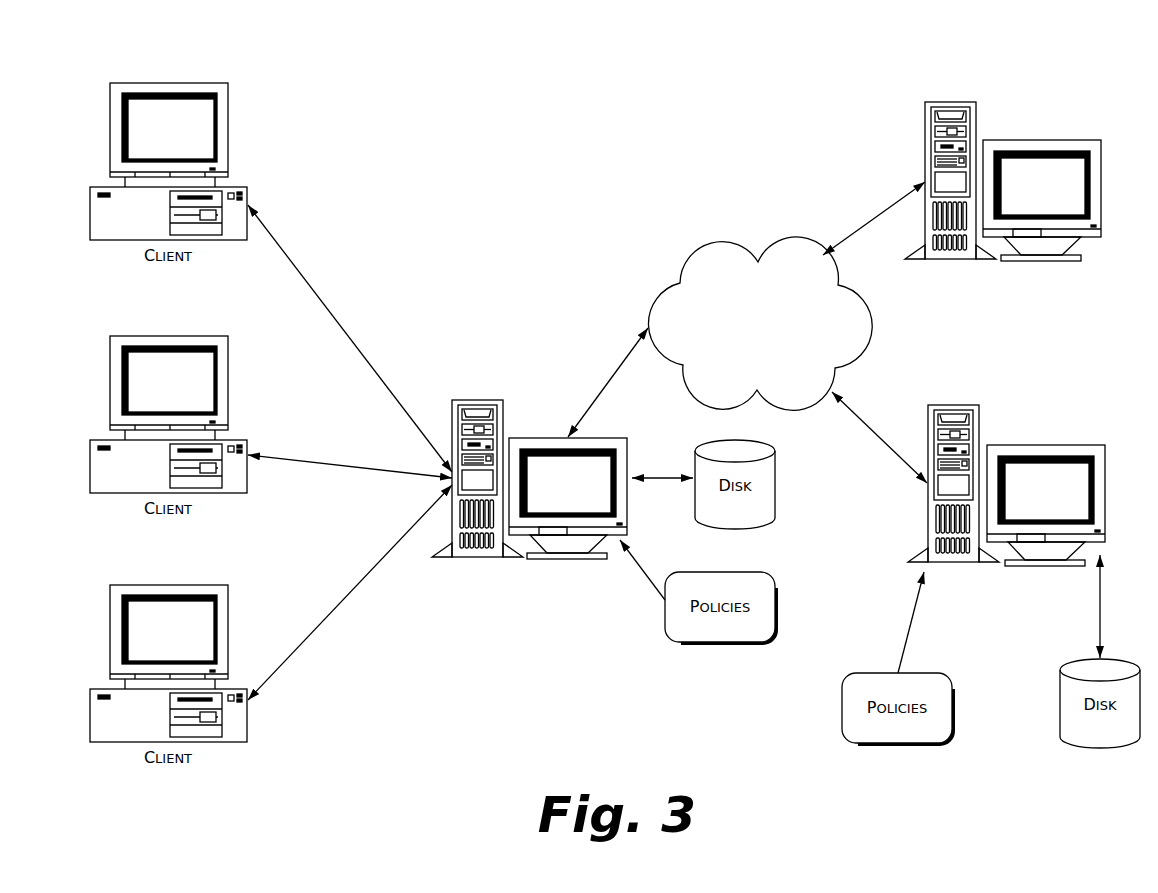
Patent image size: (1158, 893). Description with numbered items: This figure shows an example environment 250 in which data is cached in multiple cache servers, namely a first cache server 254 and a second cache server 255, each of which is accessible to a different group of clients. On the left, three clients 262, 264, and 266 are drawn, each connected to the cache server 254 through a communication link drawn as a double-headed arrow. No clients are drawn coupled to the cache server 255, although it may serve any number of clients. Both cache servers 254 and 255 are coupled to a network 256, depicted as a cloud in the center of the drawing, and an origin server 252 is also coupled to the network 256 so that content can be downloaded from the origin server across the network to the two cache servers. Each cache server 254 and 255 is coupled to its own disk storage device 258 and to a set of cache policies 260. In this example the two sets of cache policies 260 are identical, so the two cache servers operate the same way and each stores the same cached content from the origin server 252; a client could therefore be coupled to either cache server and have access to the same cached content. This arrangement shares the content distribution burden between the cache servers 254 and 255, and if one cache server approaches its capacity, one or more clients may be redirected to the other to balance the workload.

The environment 250 is at (402, 52).
The origin server 252 is at (945, 102).
The cache server 254 is at (472, 400).
The cache server 255 is at (1048, 445).
The network 256 is at (760, 323).
The disk storage device 258 is at (775, 478).
The cache policies 260 is at (775, 600).
The client 262 is at (165, 83).
The client 264 is at (165, 336).
The client 266 is at (165, 585).